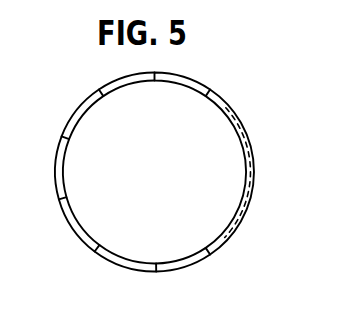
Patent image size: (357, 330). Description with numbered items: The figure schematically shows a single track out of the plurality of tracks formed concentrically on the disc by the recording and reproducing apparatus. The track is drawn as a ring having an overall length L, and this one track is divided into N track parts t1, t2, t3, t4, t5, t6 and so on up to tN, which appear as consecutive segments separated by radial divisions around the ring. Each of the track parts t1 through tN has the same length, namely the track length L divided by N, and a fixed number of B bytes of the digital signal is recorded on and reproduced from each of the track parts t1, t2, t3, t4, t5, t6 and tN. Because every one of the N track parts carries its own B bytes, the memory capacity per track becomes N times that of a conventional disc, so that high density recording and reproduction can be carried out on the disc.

The track part t1 is at (118, 83).
The track part t2 is at (78, 120).
The track part t3 is at (60, 172).
The track part t4 is at (73, 220).
The track part t5 is at (120, 262).
The track part t6 is at (182, 263).
The track part tN is at (190, 82).
The track length L is at (254, 188).